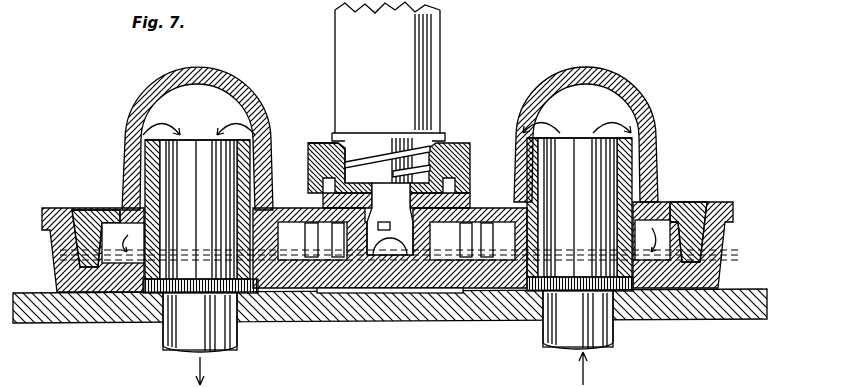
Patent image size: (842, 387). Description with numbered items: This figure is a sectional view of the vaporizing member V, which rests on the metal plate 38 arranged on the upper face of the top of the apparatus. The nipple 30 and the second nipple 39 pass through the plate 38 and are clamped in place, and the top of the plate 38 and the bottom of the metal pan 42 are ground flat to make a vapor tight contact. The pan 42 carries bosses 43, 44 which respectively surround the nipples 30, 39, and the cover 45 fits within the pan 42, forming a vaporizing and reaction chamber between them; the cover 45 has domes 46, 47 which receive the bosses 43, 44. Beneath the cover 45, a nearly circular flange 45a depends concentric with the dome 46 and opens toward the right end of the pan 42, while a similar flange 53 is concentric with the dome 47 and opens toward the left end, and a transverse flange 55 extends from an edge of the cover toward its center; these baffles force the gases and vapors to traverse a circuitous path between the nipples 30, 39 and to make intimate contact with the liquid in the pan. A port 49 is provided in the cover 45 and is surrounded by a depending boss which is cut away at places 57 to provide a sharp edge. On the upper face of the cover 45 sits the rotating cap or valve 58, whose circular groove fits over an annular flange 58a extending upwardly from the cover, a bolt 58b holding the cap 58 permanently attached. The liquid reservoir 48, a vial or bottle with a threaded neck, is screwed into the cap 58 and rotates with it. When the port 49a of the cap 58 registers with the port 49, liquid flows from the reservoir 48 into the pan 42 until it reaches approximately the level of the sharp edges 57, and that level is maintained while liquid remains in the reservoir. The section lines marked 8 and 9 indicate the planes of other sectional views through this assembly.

The metal plate 38 is at (62, 313).
The metal pan 42 is at (55, 208).
The cover 45 is at (94, 215).
The nearly circular flange 45a is at (507, 252).
The boss 44 is at (153, 155).
The boss 43 is at (622, 145).
The dome 47 is at (167, 82).
The dome 46 is at (617, 78).
The second nipple 39 is at (190, 152).
The nipple 30 is at (573, 145).
The liquid reservoir 48 is at (432, 28).
The rotating cap or valve 58 is at (322, 147).
The annular flange 58a is at (322, 190).
The bolt 58b is at (372, 228).
The port 49 is at (377, 210).
The port 49a is at (398, 192).
The transverse flange 55 is at (312, 237).
The flange 53 is at (292, 223).
The cut away places 57 is at (413, 298).
The section line 8 is at (53, 267).
The section line 9 is at (388, 100).
The vaporizing member V is at (718, 58).